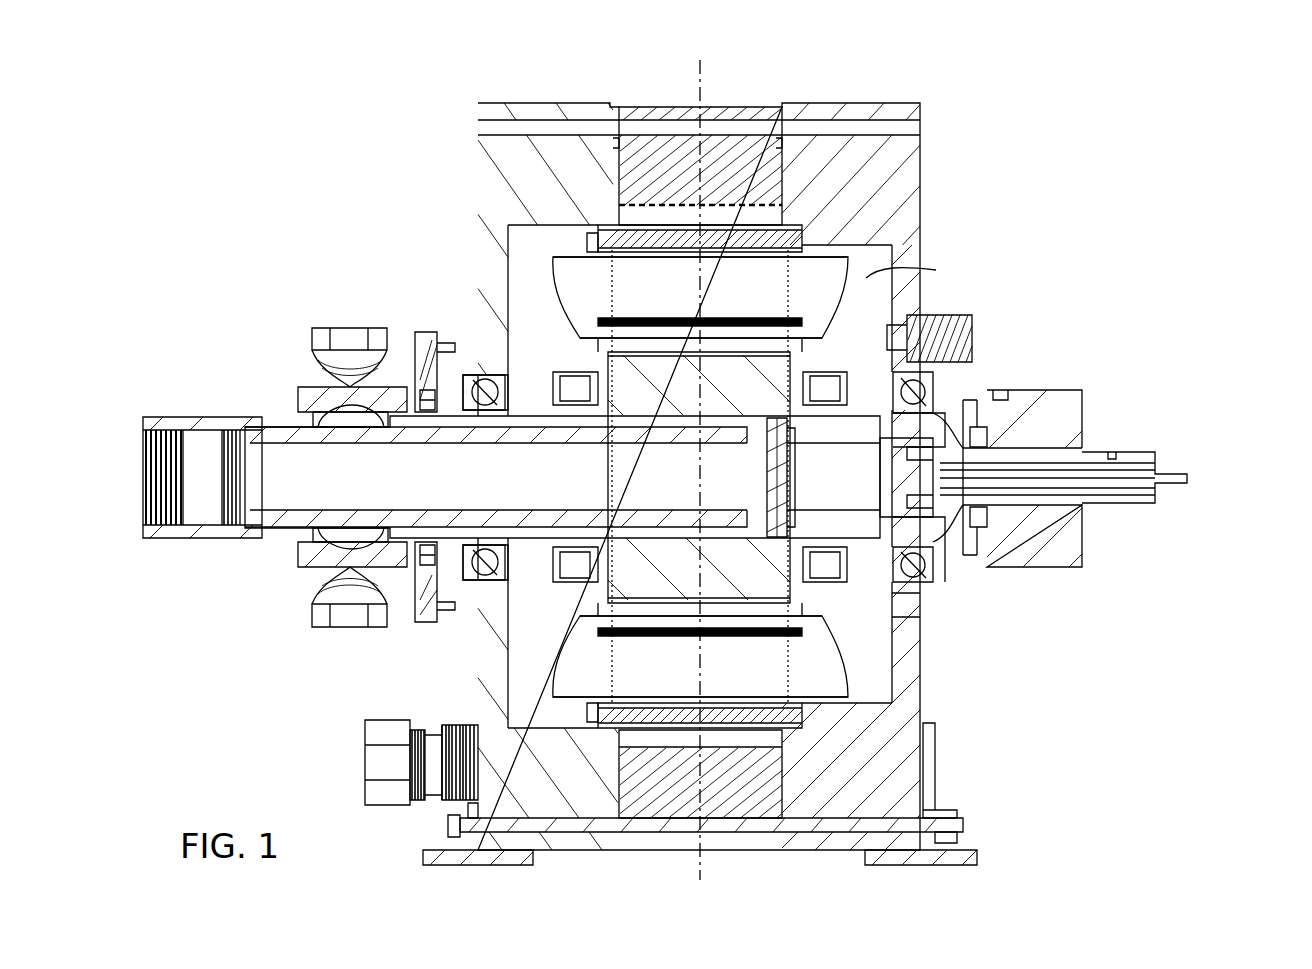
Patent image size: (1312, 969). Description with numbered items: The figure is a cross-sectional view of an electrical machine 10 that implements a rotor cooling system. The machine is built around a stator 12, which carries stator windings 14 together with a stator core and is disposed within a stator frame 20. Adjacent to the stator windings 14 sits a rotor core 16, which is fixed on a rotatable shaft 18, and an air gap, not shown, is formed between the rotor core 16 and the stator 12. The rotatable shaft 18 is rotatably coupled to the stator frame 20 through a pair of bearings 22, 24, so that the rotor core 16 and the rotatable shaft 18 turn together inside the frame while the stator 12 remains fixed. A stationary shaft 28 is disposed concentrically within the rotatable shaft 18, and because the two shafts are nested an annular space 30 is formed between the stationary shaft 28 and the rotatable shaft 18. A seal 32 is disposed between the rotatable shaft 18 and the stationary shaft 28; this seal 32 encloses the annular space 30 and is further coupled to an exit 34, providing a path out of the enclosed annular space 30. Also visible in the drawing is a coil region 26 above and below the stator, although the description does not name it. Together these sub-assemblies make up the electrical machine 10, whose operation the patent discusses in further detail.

The electrical machine 10 is at (1212, 95).
The stator 12 is at (738, 476).
The stator windings 14 is at (760, 290).
The rotor core 16 is at (802, 338).
The rotatable shaft 18 is at (856, 412).
The stator frame 20 is at (916, 168).
The bearing 22 is at (935, 378).
The bearing 24 is at (476, 380).
The coil winding 26 is at (736, 150).
The stationary shaft 28 is at (288, 522).
The annular space 30 is at (512, 422).
The seal 32 is at (421, 392).
The exit 34 is at (343, 336).